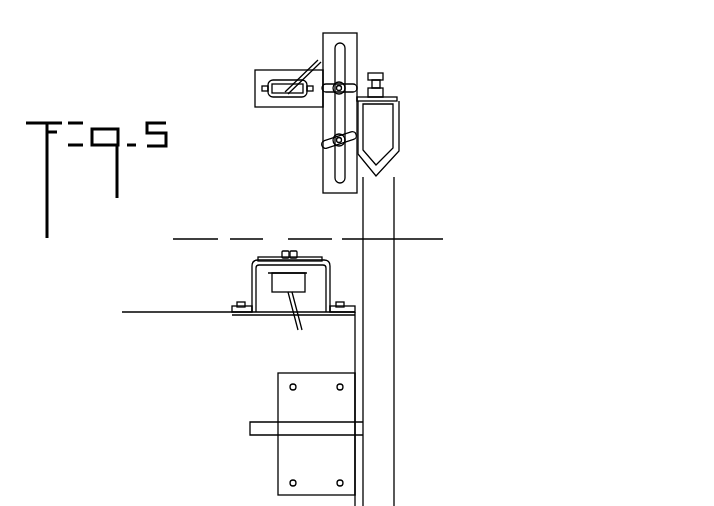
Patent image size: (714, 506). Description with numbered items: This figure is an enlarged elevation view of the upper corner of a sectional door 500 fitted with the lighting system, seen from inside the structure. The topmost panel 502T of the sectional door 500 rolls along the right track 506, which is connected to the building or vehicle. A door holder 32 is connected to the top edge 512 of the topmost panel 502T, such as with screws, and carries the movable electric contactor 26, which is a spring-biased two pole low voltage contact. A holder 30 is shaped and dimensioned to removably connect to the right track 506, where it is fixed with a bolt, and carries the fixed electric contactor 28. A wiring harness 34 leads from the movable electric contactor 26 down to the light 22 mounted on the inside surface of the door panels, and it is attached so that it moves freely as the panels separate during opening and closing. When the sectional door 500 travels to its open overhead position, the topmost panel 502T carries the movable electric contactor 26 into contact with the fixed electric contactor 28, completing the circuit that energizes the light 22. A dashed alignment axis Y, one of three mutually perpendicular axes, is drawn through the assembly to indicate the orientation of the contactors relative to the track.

The light 22 is at (308, 325).
The movable electric contactor 26 is at (287, 251).
The fixed electric contactor 28 is at (282, 85).
The holder 30 is at (377, 55).
The door holder 32 is at (252, 296).
The wiring harness 34 is at (287, 312).
The sectional door 500 is at (201, 383).
The topmost panel 502T is at (215, 323).
The right track 506 is at (385, 382).
The top edge 512 is at (150, 313).
The alignment axis Y is at (423, 239).